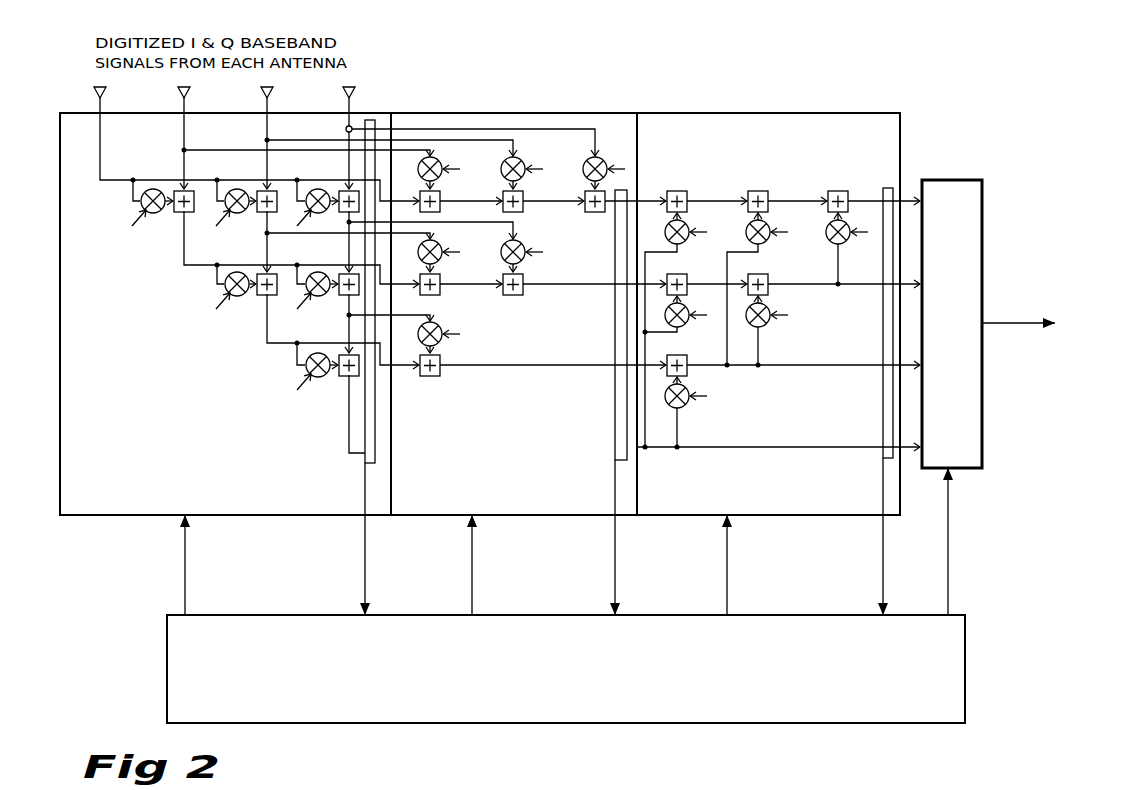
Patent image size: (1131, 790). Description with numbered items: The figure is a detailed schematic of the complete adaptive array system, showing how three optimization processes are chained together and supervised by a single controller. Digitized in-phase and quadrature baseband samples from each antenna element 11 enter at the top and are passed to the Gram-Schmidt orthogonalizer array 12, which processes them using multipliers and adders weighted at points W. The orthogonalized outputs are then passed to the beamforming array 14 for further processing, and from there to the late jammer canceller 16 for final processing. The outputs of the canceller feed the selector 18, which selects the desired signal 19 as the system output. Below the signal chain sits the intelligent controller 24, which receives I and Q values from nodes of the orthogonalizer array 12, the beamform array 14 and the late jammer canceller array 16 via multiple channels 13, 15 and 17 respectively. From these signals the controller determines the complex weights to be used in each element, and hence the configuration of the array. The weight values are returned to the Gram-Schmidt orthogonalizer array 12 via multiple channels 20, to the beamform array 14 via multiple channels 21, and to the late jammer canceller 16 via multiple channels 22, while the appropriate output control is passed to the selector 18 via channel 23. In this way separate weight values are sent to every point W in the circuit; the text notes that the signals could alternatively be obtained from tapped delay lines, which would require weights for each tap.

The antenna element 11 is at (224, 93).
The Gram-Schmidt orthogonalizer array 12 is at (327, 314).
The multiple channels 13 is at (380, 367).
The beamforming array 14 is at (528, 314).
The multiple channels 15 is at (631, 402).
The late jammer canceller 16 is at (778, 314).
The multiple channels 17 is at (897, 401).
The selector 18 is at (952, 324).
The desired signal 19 is at (1043, 289).
The multiple channels 20 is at (202, 565).
The multiple channels 21 is at (488, 565).
The multiple channels 22 is at (745, 565).
The output control channel 23 is at (967, 541).
The intelligent controller 24 is at (566, 669).